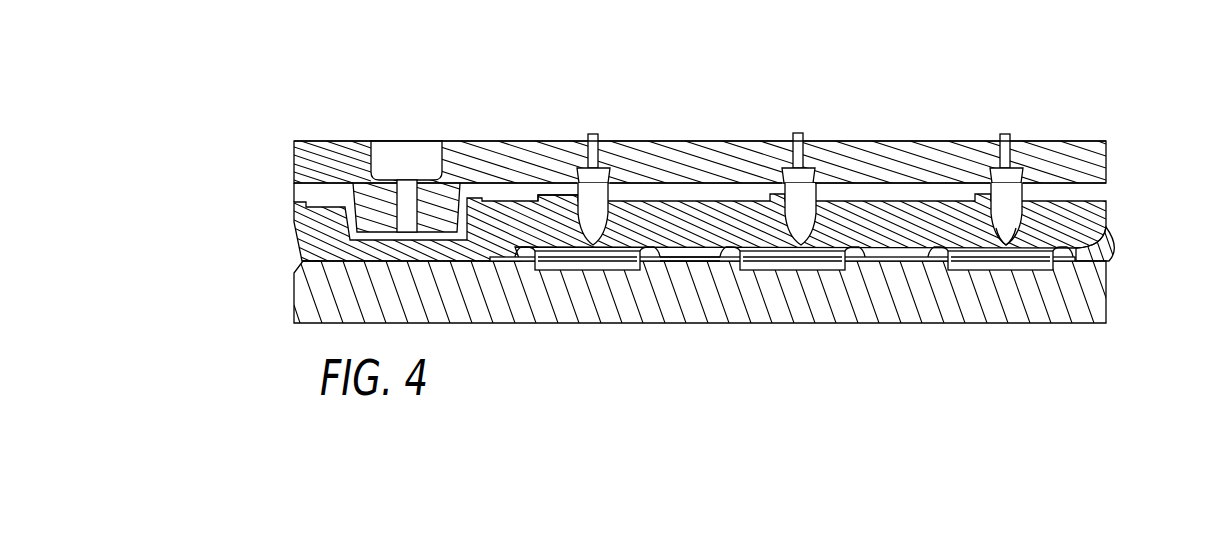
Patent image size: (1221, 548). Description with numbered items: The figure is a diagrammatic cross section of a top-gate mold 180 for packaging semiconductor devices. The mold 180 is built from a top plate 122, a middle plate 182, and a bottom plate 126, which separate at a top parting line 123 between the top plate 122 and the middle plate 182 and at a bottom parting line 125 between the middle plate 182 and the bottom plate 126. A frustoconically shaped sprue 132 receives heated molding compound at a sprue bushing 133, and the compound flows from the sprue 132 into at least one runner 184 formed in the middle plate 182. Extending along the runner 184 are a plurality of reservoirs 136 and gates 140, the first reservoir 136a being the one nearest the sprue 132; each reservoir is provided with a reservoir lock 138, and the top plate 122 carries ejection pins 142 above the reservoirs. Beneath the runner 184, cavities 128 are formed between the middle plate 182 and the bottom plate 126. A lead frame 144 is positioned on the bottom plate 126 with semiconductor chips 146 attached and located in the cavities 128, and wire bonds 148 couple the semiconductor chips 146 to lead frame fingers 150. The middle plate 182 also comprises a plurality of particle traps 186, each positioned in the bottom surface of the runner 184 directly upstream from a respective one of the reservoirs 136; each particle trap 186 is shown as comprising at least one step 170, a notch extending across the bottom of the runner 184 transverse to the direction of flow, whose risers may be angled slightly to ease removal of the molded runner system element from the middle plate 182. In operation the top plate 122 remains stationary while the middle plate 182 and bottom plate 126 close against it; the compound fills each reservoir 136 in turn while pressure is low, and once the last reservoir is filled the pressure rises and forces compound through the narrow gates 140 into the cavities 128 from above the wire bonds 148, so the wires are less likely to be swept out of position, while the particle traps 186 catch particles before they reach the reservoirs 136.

The mold 180 is at (936, 69).
The top plate 122 is at (293, 162).
The top parting line 123 is at (293, 181).
The middle plate 182 is at (291, 237).
The bottom parting line 125 is at (298, 261).
The bottom plate 126 is at (327, 304).
The runner 184 is at (318, 192).
The sprue bushing 133 is at (406, 195).
The sprue 132 is at (432, 203).
The particle trap 186 is at (520, 186).
The step 170 is at (560, 199).
The first reservoir 136a is at (596, 202).
The ejection pin 142 is at (807, 132).
The reservoir lock 138 is at (808, 170).
The reservoir 136 is at (992, 232).
The gate 140 is at (1007, 238).
The wire bond 148 is at (1097, 236).
The cavity 128 is at (528, 264).
The lead frame 144 is at (682, 263).
The semiconductor chip 146 is at (811, 263).
The lead frame finger 150 is at (1058, 266).